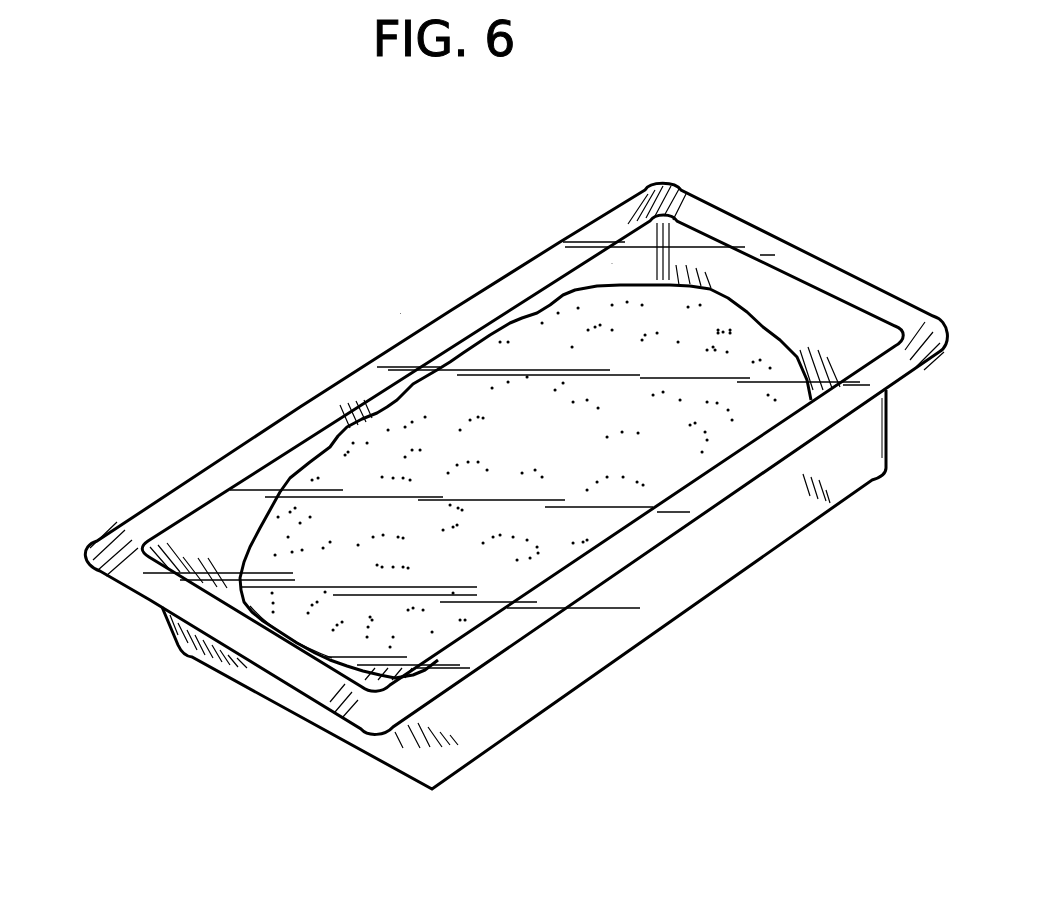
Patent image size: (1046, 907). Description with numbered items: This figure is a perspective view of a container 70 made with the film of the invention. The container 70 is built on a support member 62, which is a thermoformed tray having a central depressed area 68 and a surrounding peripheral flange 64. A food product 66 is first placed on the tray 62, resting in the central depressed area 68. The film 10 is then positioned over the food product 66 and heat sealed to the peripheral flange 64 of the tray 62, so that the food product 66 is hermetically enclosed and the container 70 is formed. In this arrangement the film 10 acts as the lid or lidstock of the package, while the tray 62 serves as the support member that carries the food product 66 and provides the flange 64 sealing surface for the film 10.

The film 10 is at (613, 263).
The support member 62 is at (705, 563).
The peripheral flange 64 is at (806, 261).
The food product 66 is at (521, 457).
The central depressed area 68 is at (310, 708).
The container 70 is at (401, 315).